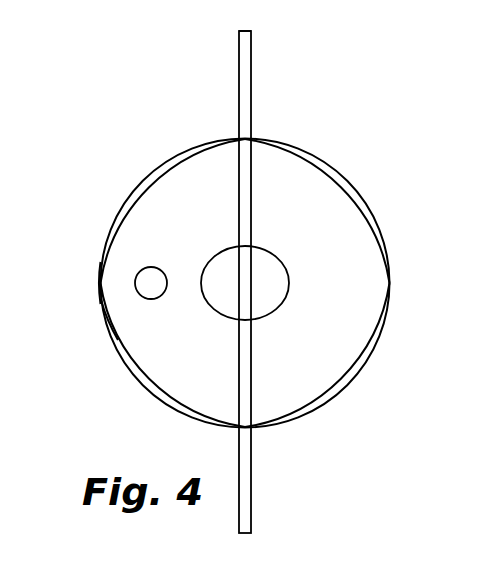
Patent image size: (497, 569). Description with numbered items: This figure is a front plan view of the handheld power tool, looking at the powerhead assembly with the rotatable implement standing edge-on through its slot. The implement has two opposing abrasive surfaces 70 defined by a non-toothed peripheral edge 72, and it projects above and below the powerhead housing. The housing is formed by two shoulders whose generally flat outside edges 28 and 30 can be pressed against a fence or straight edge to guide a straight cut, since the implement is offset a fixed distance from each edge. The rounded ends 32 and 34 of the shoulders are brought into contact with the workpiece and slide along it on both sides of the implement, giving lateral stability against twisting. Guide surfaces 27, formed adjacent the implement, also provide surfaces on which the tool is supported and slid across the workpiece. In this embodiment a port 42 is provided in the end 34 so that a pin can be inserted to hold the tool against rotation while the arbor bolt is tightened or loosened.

The guide surface 27 is at (172, 365).
The outside edge 28 is at (390, 280).
The outside edge 30 is at (101, 282).
The end of shoulder 32 is at (357, 249).
The end of shoulder 34 is at (130, 316).
The port 42 is at (160, 267).
The abrasive surface 70 is at (239, 78).
The non-toothed peripheral edge 72 is at (249, 31).